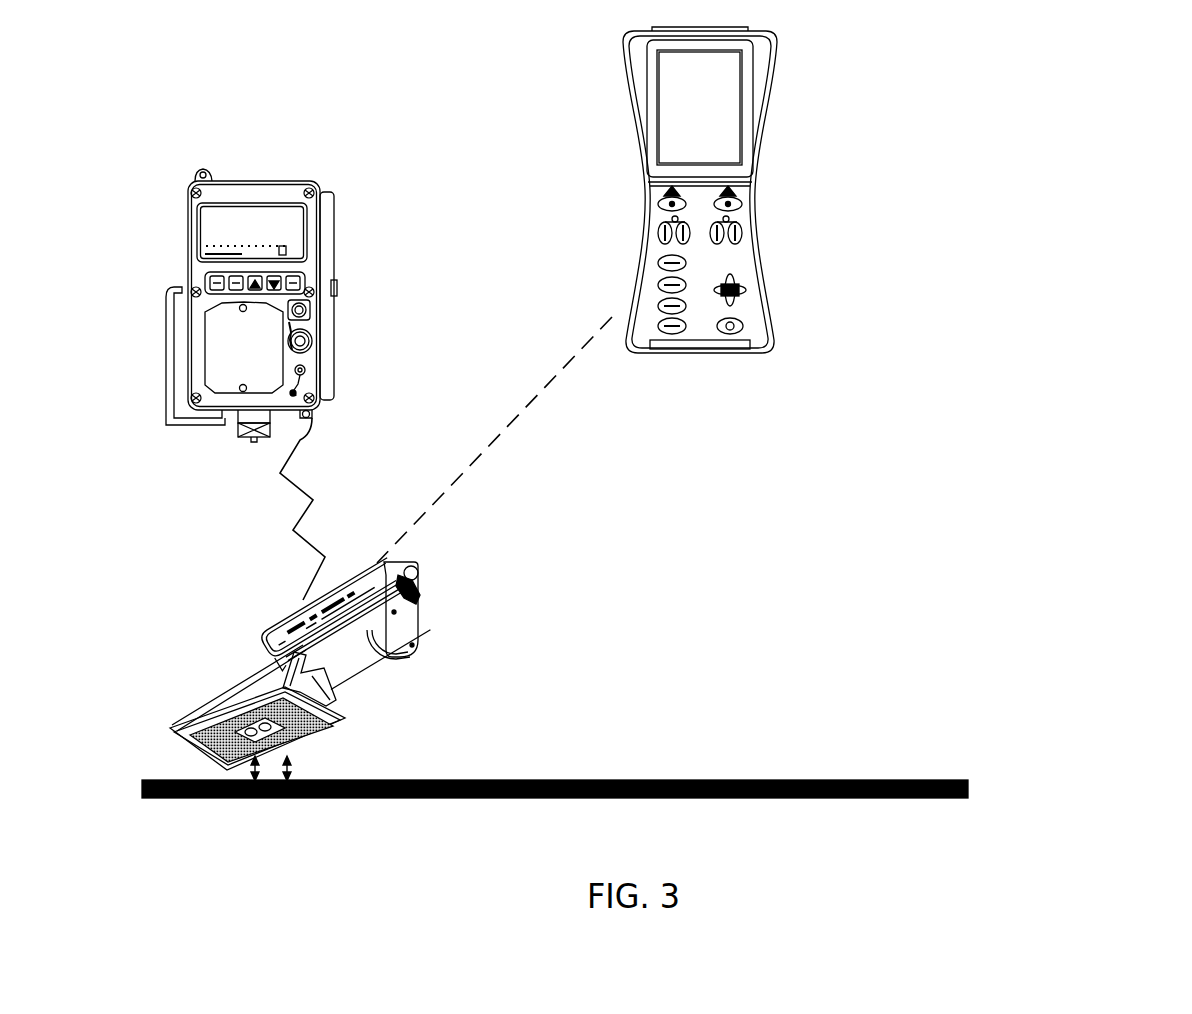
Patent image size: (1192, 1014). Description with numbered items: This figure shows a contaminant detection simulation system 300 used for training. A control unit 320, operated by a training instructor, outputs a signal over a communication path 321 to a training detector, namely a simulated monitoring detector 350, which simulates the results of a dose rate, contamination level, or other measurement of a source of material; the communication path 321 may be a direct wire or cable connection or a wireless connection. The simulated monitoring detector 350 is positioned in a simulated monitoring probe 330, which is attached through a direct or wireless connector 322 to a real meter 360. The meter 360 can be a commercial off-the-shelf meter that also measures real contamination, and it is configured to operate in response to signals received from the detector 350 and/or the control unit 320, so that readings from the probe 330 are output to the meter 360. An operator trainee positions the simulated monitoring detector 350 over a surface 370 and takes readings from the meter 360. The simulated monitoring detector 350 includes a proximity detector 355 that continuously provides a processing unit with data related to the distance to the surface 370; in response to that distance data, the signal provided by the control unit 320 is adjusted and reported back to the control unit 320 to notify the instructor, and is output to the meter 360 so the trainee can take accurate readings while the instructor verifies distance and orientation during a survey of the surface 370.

The contaminant detection simulation system 300 is at (1030, 140).
The control unit 320 is at (782, 96).
The communication path 321 is at (548, 400).
The direct or wireless connector 322 is at (311, 479).
The simulated monitoring probe 330 is at (437, 598).
The simulated monitoring detector 350 is at (347, 707).
The proximity detector 355 is at (250, 717).
The meter 360 is at (251, 269).
The surface 370 is at (277, 807).